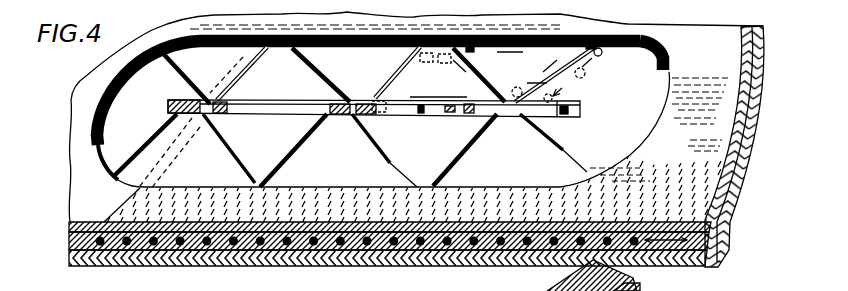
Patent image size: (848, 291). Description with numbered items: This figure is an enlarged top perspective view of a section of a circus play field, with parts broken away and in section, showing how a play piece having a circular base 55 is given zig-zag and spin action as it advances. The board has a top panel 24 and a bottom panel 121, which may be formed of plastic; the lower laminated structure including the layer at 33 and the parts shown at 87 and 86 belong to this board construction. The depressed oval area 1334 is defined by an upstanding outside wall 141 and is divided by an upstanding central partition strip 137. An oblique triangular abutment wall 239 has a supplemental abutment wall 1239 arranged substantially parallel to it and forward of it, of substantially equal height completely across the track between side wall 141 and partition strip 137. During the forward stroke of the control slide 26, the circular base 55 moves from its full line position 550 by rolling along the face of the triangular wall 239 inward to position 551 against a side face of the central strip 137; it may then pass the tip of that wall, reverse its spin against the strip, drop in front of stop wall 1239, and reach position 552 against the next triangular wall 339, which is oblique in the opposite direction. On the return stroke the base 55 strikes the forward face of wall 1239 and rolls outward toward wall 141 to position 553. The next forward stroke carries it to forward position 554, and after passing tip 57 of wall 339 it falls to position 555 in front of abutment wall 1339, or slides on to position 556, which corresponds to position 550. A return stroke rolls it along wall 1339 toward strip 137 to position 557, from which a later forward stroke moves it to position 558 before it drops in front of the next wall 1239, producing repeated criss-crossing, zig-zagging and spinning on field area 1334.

The upstanding outside wall 141 is at (123, 72).
The top panel 24 is at (744, 61).
The control slide 26 is at (760, 115).
The intermediate laminate layer with conductors 33 is at (158, 251).
The bottom panel 121 is at (718, 249).
The supplemental abutment wall 1239 is at (365, 33).
The circular base 55 is at (625, 40).
The depressed oval area 1334 is at (117, 127).
The triangular wall 339 is at (332, 80).
The tip of oblique triangular wall 57 is at (470, 47).
The stop or abutment wall 1339 is at (316, 76).
The upstanding central partition strip 137 is at (570, 110).
The forward position 554 is at (469, 44).
The position 556 is at (425, 64).
The position 555 is at (444, 65).
The position 558 is at (384, 105).
The position 557 is at (468, 114).
The position 552 is at (521, 87).
The position 551 is at (554, 98).
The oblique triangular abutment wall 239 is at (587, 73).
The full line position 550 is at (606, 55).
The position 553 is at (584, 42).
The support bracket 87 is at (637, 284).
The bracket foot 86 is at (650, 286).